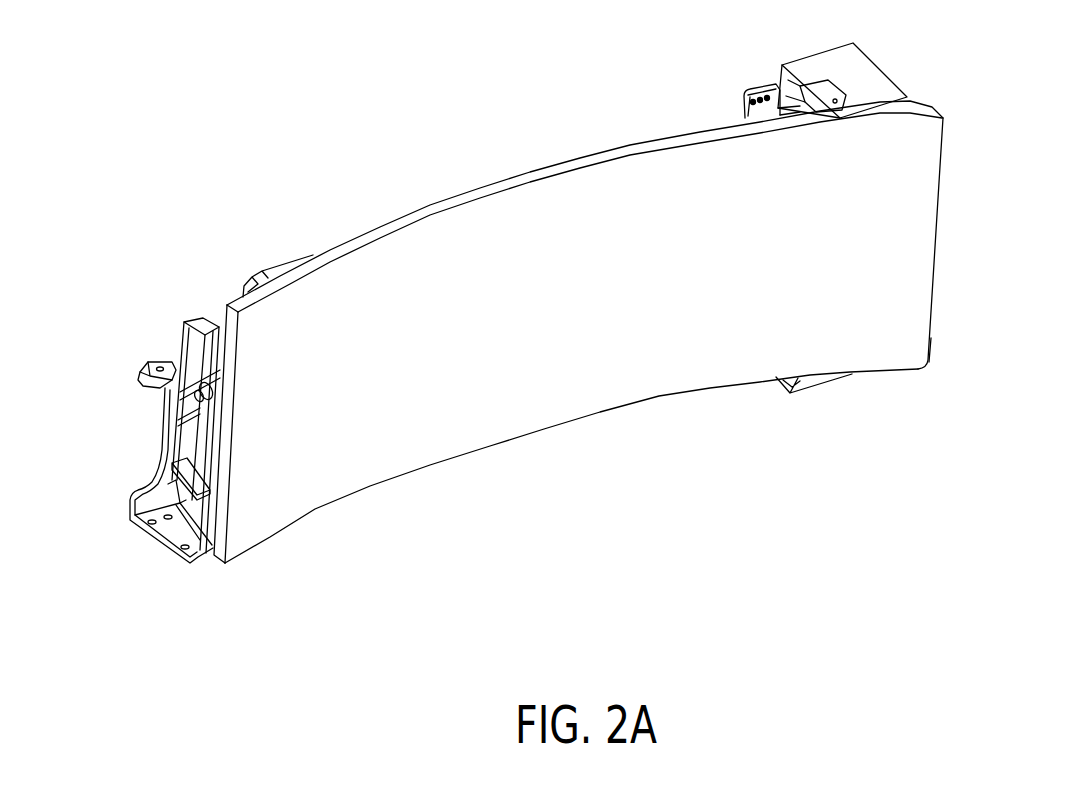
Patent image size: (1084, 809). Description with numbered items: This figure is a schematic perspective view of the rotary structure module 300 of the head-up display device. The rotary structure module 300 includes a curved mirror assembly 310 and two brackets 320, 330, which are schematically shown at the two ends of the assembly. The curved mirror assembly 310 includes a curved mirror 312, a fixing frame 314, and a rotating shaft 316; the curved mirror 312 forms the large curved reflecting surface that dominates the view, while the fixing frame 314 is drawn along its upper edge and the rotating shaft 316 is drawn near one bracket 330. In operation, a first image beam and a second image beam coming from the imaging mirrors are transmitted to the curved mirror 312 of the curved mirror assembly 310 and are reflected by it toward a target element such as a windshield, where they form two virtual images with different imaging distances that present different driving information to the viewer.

The rotary structure module 300 is at (502, 297).
The curved mirror assembly 310 is at (494, 332).
The curved mirror 312 is at (665, 381).
The fixing frame 314 is at (272, 272).
The rotating shaft 316 is at (183, 367).
The bracket 320 is at (860, 73).
The bracket 330 is at (202, 327).